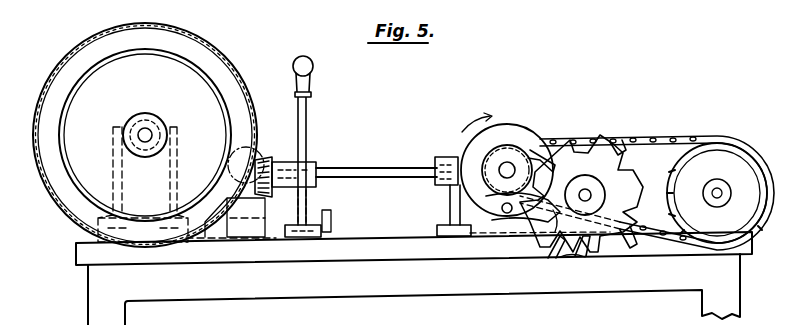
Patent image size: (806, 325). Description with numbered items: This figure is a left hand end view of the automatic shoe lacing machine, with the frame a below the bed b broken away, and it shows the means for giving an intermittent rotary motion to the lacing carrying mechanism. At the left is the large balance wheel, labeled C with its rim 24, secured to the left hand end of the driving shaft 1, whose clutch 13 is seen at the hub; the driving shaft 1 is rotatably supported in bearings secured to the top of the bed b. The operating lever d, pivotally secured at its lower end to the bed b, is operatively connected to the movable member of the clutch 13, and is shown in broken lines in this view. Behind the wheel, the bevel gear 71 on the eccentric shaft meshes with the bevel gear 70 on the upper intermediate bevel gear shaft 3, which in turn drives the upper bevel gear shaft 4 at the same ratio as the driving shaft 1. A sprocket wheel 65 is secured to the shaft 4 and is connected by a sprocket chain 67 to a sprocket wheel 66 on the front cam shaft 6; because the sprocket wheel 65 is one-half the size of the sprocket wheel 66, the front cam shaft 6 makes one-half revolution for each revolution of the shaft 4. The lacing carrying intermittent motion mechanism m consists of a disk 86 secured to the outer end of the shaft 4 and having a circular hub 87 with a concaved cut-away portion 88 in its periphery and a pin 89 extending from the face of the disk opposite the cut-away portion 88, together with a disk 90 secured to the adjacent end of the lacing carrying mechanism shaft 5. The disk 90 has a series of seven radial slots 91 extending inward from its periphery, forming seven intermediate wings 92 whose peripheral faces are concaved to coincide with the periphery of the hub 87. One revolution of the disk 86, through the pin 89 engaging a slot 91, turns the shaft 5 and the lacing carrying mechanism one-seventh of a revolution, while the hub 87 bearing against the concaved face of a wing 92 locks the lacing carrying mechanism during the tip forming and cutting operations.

The rim of wheel 24 is at (81, 50).
The fly wheel C is at (222, 60).
The driving shaft 1 is at (142, 131).
The clutch 13 is at (152, 130).
The bevel gear 71 is at (230, 164).
The bevel gear 70 is at (268, 157).
The operating lever d is at (314, 71).
The upper intermediate bevel gear shaft 3 is at (358, 167).
The upper intermediate bevel gear shaft 4 is at (500, 168).
The disk 86 is at (507, 125).
The circular hub 87 is at (515, 160).
The concaved cut-away portion 88 is at (500, 196).
The pin 89 is at (506, 214).
The sprocket wheel 65 is at (462, 176).
The lacing carrying intermittent motion mechanism m is at (581, 193).
The lacing carrying mechanism shaft 5 is at (587, 193).
The front cam shaft 6 is at (718, 192).
The sprocket wheel 66 is at (708, 222).
The sprocket chain 67 is at (676, 138).
The radial slots 91 is at (636, 150).
The intermediate wings 92 is at (586, 150).
The disk 90 is at (582, 248).
The bed b is at (80, 253).
The frame a is at (86, 301).